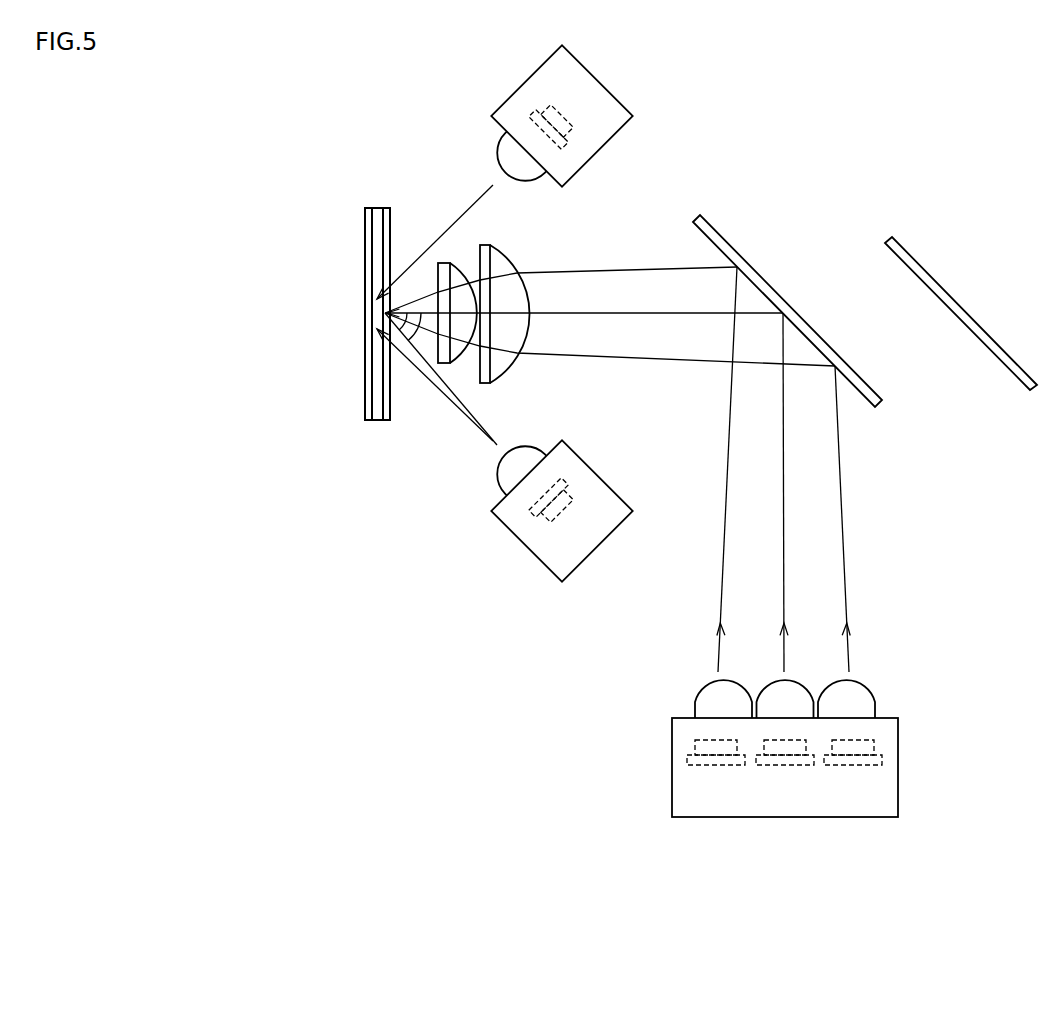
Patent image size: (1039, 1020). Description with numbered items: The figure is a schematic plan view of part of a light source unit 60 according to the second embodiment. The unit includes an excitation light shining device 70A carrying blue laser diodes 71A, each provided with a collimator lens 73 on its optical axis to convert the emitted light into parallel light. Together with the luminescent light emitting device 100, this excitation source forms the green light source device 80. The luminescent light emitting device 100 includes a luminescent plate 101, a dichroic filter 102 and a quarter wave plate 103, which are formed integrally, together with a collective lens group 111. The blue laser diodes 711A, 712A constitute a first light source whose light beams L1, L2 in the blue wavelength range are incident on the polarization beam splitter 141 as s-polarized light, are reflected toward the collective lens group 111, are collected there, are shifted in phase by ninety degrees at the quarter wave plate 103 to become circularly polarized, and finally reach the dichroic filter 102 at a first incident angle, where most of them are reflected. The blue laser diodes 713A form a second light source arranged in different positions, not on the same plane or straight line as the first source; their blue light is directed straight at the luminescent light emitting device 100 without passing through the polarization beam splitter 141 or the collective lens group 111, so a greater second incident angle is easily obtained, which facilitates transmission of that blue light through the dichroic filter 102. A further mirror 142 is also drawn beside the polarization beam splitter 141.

The light source unit 60 is at (668, 840).
The excitation light shining device 70A is at (628, 770).
The blue laser diode 71A is at (669, 476).
The blue laser diode 711A is at (785, 767).
The blue laser diode 712A is at (722, 767).
The blue laser diode 713A is at (637, 553).
The collimator lens 73 is at (493, 145).
The green light source device 80 is at (357, 260).
The luminescent light emitting device 100 is at (358, 202).
The luminescent plate 101 is at (365, 392).
The dichroic filter 102 is at (377, 210).
The quarter wave plate 103 is at (390, 393).
The collective lens group 111 is at (460, 258).
The polarization beam splitter 141 is at (727, 237).
The mirror 142 is at (917, 258).
The light beam L1 is at (787, 527).
The light beam L2 is at (726, 468).